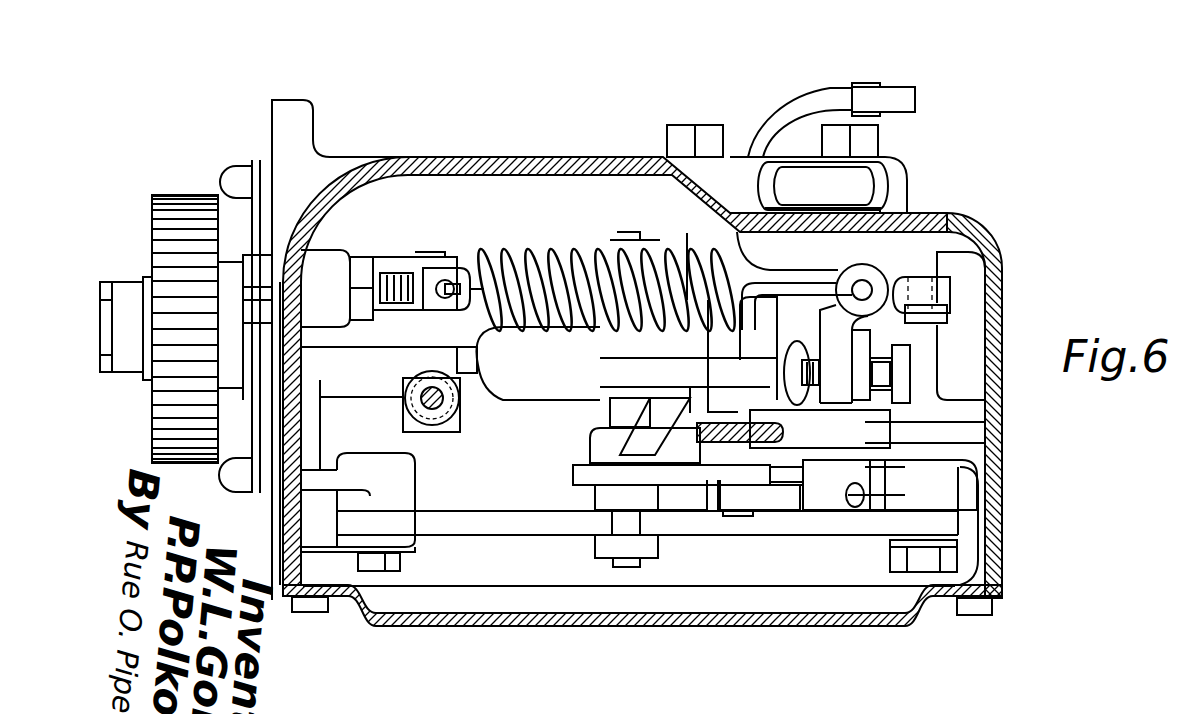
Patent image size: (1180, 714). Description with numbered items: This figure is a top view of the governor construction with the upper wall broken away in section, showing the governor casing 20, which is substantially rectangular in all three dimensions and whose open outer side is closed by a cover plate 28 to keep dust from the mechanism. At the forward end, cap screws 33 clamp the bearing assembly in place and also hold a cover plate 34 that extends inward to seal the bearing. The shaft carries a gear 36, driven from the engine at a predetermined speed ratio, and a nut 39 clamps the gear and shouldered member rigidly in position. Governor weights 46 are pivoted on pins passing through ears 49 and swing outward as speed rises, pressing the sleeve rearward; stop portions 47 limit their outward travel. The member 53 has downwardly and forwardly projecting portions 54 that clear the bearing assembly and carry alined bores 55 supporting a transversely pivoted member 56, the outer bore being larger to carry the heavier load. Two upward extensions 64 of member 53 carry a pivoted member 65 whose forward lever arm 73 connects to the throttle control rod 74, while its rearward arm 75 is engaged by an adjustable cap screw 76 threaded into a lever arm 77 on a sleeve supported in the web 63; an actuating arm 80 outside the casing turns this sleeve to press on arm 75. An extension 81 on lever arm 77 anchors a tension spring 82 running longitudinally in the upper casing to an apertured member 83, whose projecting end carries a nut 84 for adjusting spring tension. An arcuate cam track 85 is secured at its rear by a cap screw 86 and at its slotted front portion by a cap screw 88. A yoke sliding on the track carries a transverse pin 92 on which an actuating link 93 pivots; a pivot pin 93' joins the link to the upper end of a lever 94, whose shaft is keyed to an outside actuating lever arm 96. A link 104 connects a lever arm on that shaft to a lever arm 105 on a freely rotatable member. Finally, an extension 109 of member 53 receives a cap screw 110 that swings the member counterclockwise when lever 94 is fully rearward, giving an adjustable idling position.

The governor casing 20 is at (1002, 472).
The cover plate 28 is at (843, 624).
The cap screws 33 is at (243, 168).
The cover plate 34 is at (252, 493).
The gear 36 is at (172, 195).
The nut 39 is at (118, 283).
The governor weights 46 is at (392, 337).
The stop portions 47 is at (353, 335).
The ears 49 is at (450, 348).
The member 53 is at (607, 427).
The downwardly and forwardly projecting portions 54 is at (683, 232).
The alined bores 55 is at (607, 240).
The transversely pivoted member 56 is at (630, 412).
The web 63 is at (812, 437).
The upward extensions 64 is at (703, 412).
The member 65 is at (538, 363).
The lever arm 73 is at (478, 393).
The throttle control rod 74 is at (403, 418).
The arm 75 is at (678, 367).
The adjustable cap screw 76 is at (905, 368).
The lever arm 77 is at (793, 394).
The actuating arm 80 is at (787, 169).
The extension 81 is at (835, 313).
The tension spring 82 is at (552, 250).
The apertured member 83 is at (458, 268).
The nut 84 is at (262, 268).
The arcuate cam track 85 is at (445, 520).
The cap screw 86 is at (920, 573).
The cap screw 88 is at (380, 572).
The transverse pin 92 is at (632, 568).
The actuating link 93 is at (734, 528).
The pivot pin 93' is at (767, 543).
The lever 94 is at (795, 500).
The outside actuating lever arm 96 is at (912, 88).
The link 104 is at (905, 277).
The lever arm 105 is at (935, 310).
The extension 109 is at (880, 468).
The cap screw 110 is at (868, 497).